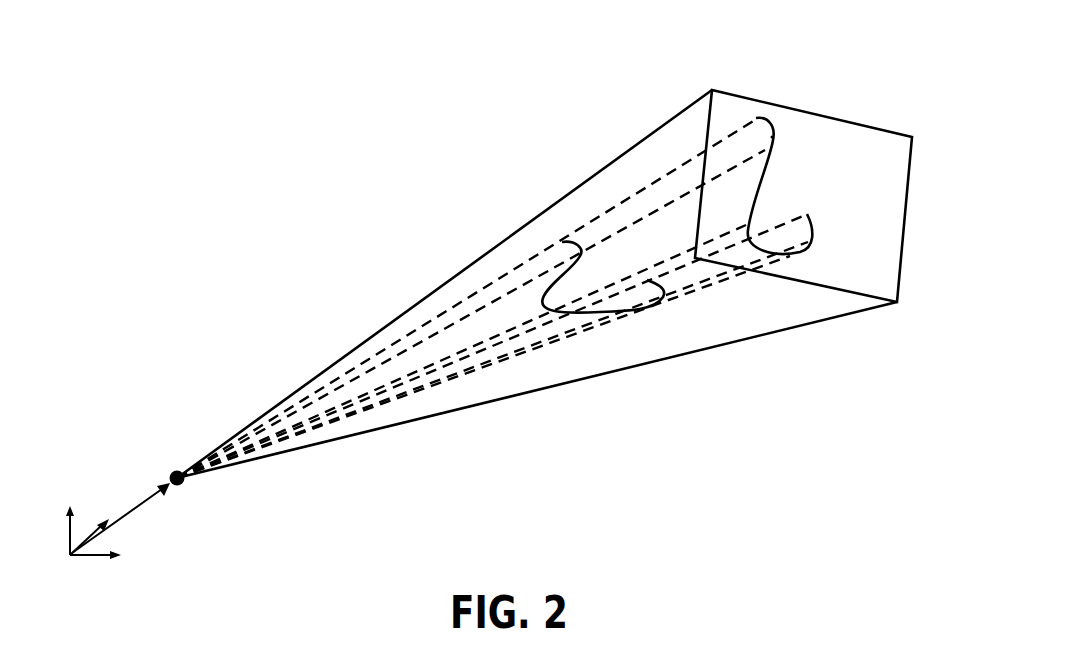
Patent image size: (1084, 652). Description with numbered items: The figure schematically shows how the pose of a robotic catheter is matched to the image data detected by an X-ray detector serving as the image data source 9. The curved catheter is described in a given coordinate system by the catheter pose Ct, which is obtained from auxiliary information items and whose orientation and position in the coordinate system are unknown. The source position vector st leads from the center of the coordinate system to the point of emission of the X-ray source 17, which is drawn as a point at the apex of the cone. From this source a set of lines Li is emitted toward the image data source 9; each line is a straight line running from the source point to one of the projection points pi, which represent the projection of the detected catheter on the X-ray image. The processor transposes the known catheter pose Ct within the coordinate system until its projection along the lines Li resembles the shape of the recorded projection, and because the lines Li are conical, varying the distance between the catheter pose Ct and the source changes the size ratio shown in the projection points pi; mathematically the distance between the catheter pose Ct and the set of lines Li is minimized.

The X-ray image data source 9 is at (898, 132).
The X-ray source 17 is at (193, 494).
The set of lines Li is at (373, 403).
The pose of the curved catheter Ct is at (540, 302).
The set of projection points pi is at (772, 137).
The source position vector st is at (137, 508).